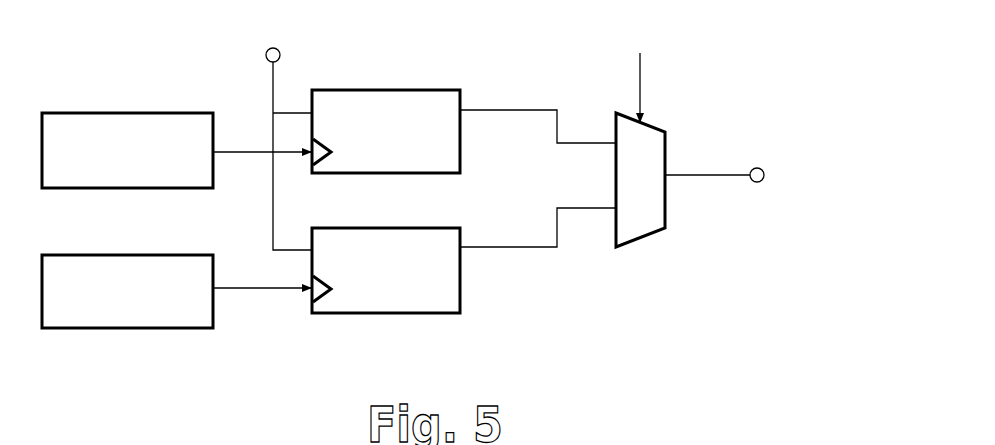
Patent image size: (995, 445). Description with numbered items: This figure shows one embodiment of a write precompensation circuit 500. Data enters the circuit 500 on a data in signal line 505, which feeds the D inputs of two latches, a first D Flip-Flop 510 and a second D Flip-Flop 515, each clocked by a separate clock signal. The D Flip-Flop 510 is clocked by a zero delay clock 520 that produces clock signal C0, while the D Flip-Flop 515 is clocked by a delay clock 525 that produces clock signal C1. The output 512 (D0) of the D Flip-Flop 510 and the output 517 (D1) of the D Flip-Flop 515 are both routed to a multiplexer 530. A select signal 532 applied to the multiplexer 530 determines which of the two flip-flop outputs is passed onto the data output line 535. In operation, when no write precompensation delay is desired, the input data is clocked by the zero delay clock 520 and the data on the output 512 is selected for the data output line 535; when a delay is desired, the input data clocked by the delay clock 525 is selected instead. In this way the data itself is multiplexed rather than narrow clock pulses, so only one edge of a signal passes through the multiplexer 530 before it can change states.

The write precompensation circuit 500 is at (727, 65).
The data in signal line 505 is at (272, 80).
The D Flip-Flop 510 is at (380, 90).
The output (D0) of D Flip-Flop 512 is at (542, 112).
The D Flip-Flop 515 is at (383, 315).
The output (D1) of D Flip-Flop 517 is at (487, 250).
The zero delay clock 520 is at (125, 113).
The delay clock 525 is at (117, 329).
The multiplexer 530 is at (643, 237).
The select signal 532 is at (640, 70).
The data output line 535 is at (688, 175).